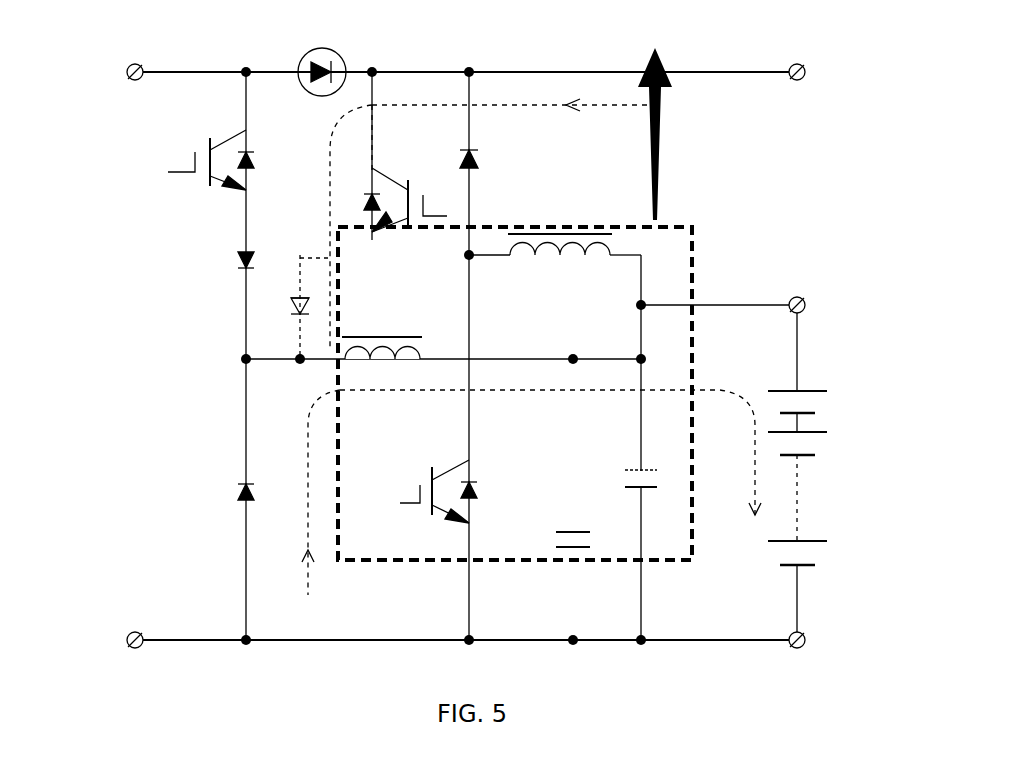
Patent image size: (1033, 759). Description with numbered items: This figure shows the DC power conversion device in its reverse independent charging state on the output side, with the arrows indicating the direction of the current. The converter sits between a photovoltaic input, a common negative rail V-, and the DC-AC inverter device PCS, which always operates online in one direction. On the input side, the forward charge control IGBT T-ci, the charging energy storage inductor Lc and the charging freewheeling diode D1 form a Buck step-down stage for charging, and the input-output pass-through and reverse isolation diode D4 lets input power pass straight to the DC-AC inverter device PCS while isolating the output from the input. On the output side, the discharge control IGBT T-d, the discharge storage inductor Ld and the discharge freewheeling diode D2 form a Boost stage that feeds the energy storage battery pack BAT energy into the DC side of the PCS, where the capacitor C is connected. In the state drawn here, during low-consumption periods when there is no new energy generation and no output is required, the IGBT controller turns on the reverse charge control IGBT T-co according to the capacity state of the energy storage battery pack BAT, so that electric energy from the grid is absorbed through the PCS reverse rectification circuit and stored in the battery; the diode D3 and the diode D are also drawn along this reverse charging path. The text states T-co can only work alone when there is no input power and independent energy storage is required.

The negative terminal V- is at (76, 608).
The input-output pass-through and reverse isolation diode D4 is at (304, 61).
The diode D3 is at (216, 271).
The discharge freewheeling diode D2 is at (497, 165).
The charging freewheeling diode D1 is at (217, 494).
The diode D is at (295, 307).
The forward charge control IGBT T-ci is at (171, 160).
The reverse charge control IGBT T-co is at (405, 188).
The discharge control IGBT T-d is at (460, 491).
The discharge storage inductor Ld is at (555, 220).
The charging energy storage inductor Lc is at (382, 327).
The capacitor C is at (583, 516).
The energy storage battery pack BAT is at (837, 472).
The DC-AC inverter device PCS is at (591, 125).